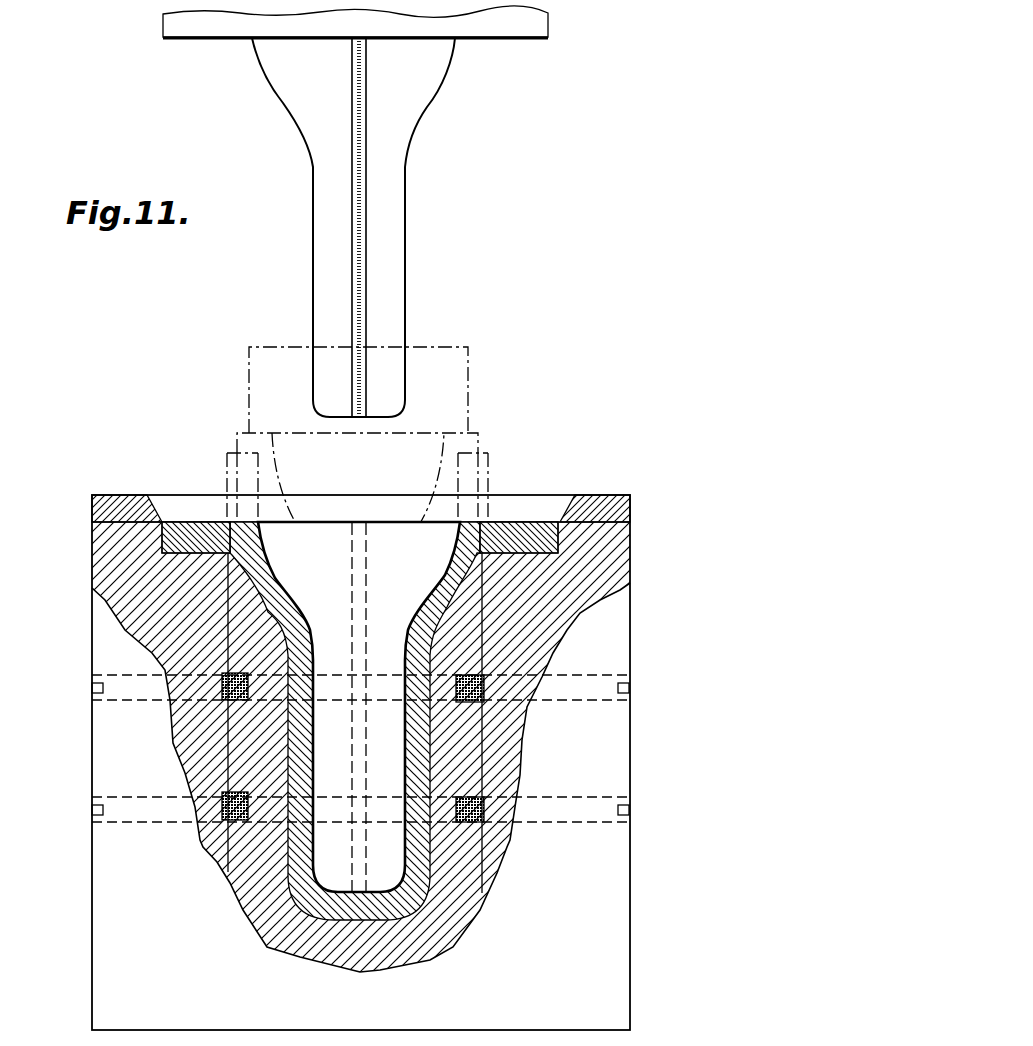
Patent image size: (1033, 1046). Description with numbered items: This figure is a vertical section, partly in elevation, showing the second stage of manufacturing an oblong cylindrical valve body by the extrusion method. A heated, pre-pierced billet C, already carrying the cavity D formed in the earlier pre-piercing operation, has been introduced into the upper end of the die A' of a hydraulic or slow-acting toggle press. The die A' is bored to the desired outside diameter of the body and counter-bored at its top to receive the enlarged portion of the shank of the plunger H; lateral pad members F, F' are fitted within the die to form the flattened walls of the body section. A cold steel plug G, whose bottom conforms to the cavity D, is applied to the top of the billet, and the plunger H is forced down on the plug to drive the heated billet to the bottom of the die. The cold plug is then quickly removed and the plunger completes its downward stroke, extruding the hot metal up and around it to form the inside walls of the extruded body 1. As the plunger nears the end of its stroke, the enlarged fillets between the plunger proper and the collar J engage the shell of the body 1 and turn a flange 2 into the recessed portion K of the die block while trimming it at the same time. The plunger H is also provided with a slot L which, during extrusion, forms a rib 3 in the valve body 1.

The collar J is at (355, 22).
The plunger H is at (397, 188).
The slot L is at (358, 138).
The cold steel plug G is at (463, 343).
The billet C is at (480, 440).
The flange 2 is at (223, 457).
The cavity D is at (440, 457).
The die A' is at (395, 762).
The lateral pad member F is at (382, 733).
The lateral pad member F' is at (256, 721).
The recessed portion K is at (165, 553).
The extruded valve body 1 is at (413, 857).
The rib 3 is at (353, 860).